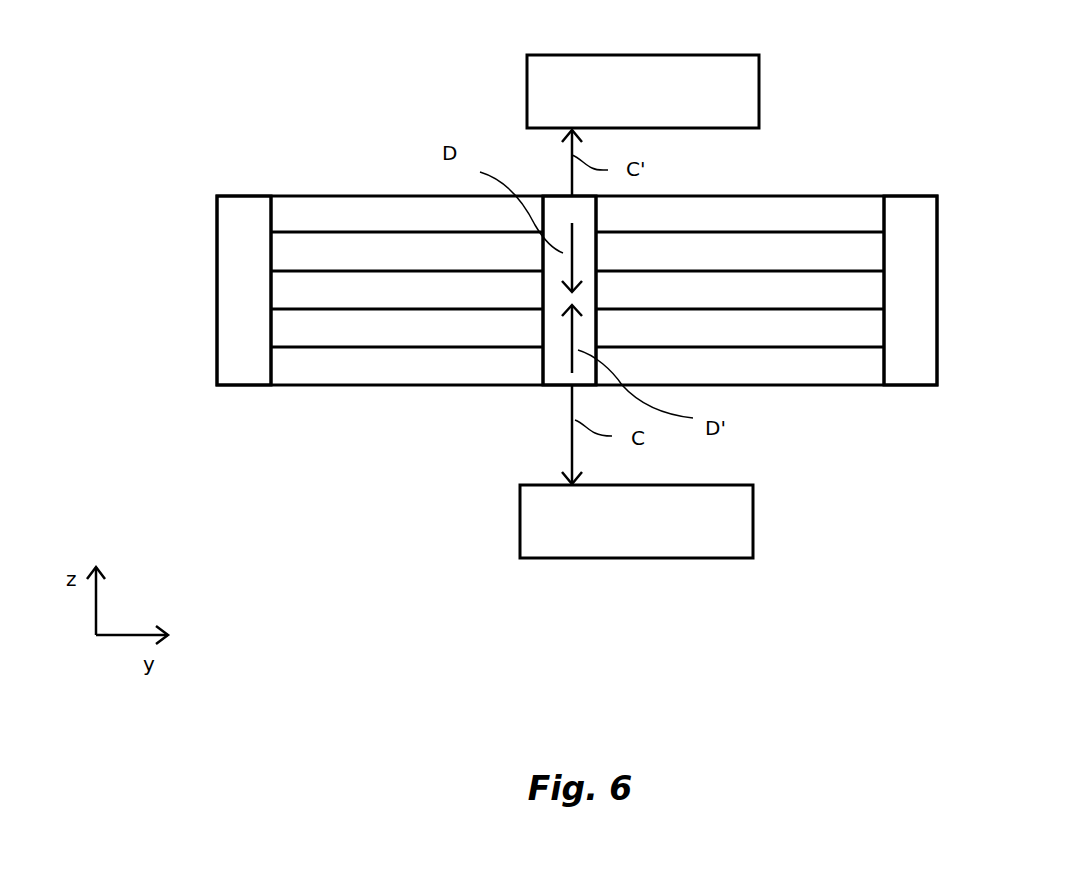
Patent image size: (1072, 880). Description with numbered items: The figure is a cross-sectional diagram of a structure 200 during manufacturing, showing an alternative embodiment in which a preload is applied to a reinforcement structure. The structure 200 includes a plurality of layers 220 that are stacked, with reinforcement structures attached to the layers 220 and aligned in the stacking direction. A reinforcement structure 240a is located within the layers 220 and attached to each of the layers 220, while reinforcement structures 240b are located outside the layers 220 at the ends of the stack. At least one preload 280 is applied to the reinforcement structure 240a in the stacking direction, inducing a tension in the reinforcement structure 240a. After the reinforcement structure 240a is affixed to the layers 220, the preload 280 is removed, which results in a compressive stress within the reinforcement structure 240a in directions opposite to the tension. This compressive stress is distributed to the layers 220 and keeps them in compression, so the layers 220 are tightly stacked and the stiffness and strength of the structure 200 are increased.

The structure 200 is at (547, 41).
The layers 220 is at (793, 196).
The reinforcement structure 240a is at (547, 385).
The reinforcement structure 240b is at (245, 388).
The preload 280 is at (639, 306).